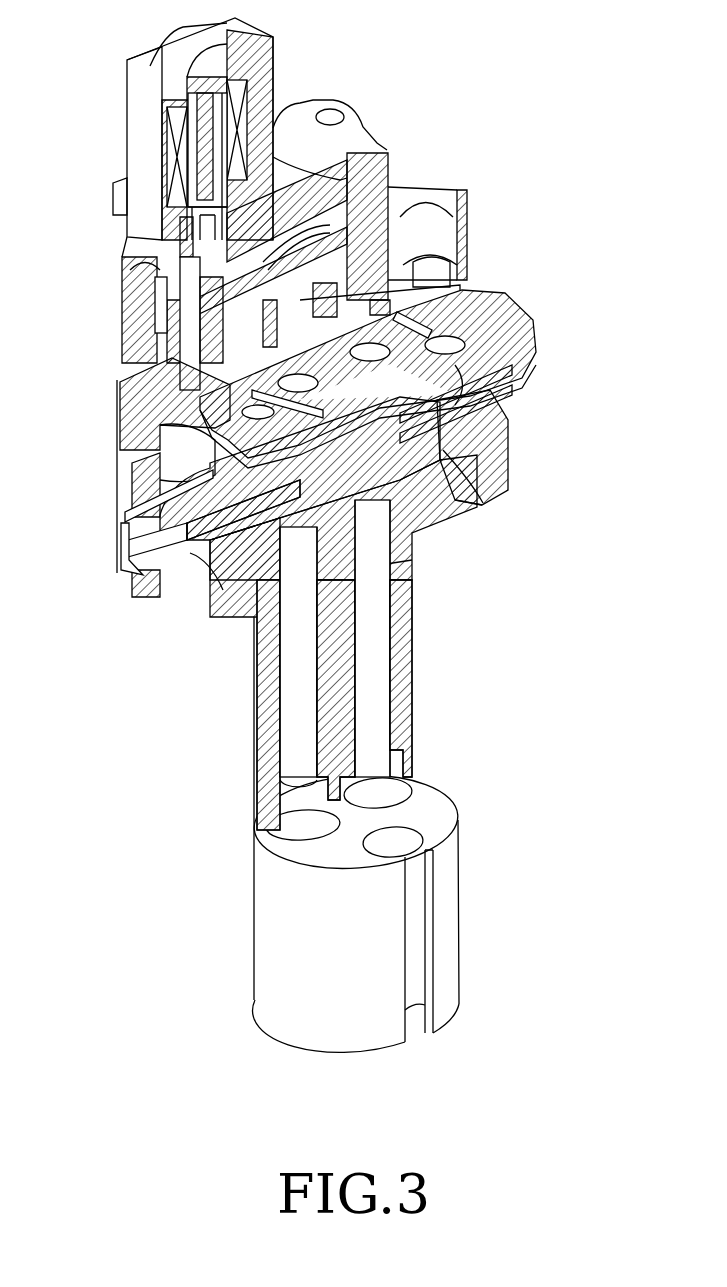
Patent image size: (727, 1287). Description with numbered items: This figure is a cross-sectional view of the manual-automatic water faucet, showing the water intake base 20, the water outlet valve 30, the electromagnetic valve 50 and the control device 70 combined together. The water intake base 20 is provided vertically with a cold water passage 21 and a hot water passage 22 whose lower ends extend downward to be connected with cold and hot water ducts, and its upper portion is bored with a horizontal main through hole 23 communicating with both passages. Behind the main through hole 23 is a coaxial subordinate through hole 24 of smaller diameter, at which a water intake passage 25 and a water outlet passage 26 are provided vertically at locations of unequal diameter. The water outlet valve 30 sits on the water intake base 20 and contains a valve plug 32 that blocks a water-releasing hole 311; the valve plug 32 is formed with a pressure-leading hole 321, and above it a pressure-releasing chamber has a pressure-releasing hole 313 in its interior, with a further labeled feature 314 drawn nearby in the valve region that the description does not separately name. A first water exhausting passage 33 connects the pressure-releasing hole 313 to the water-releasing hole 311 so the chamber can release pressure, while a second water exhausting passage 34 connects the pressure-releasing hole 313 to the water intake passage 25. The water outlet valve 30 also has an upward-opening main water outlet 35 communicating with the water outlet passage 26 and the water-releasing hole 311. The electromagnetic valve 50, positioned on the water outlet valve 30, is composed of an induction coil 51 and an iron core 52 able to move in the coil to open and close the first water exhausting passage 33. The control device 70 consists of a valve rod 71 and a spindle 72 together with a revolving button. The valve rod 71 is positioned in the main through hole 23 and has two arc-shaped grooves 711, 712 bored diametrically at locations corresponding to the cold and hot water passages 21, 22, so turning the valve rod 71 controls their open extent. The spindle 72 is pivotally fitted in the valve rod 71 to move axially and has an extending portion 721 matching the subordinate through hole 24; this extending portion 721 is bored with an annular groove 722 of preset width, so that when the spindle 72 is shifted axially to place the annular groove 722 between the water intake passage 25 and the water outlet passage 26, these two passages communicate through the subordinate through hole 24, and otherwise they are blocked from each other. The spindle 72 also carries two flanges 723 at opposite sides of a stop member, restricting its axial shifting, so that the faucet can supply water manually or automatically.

The water intake base 20 is at (396, 776).
The cold water passage 21 is at (305, 688).
The hot water passage 22 is at (390, 642).
The main through hole 23 is at (185, 580).
The subordinate through hole 24 is at (497, 412).
The water intake passage 25 is at (463, 370).
The water outlet passage 26 is at (460, 395).
The water outlet valve 30 is at (365, 284).
The valve plug 32 is at (420, 190).
The first water exhausting passage 33 is at (200, 355).
The second water exhausting passage 34 is at (160, 308).
The main water outlet 35 is at (438, 227).
The electromagnetic valve 50 is at (216, 129).
The induction coil 51 is at (167, 163).
The iron core 52 is at (202, 117).
The control device 70 is at (315, 503).
The valve rod 71 is at (200, 560).
The spindle 72 is at (133, 580).
The water-releasing hole 311 is at (425, 300).
The pressure-releasing hole 313 is at (358, 255).
The seat 314 is at (157, 273).
The pressure-leading hole 321 is at (150, 398).
The arc-shaped groove 711 is at (385, 568).
The arc-shaped groove 712 is at (392, 522).
The extending portion 721 is at (490, 440).
The annular groove 722 is at (475, 500).
The flanges 723 is at (213, 495).